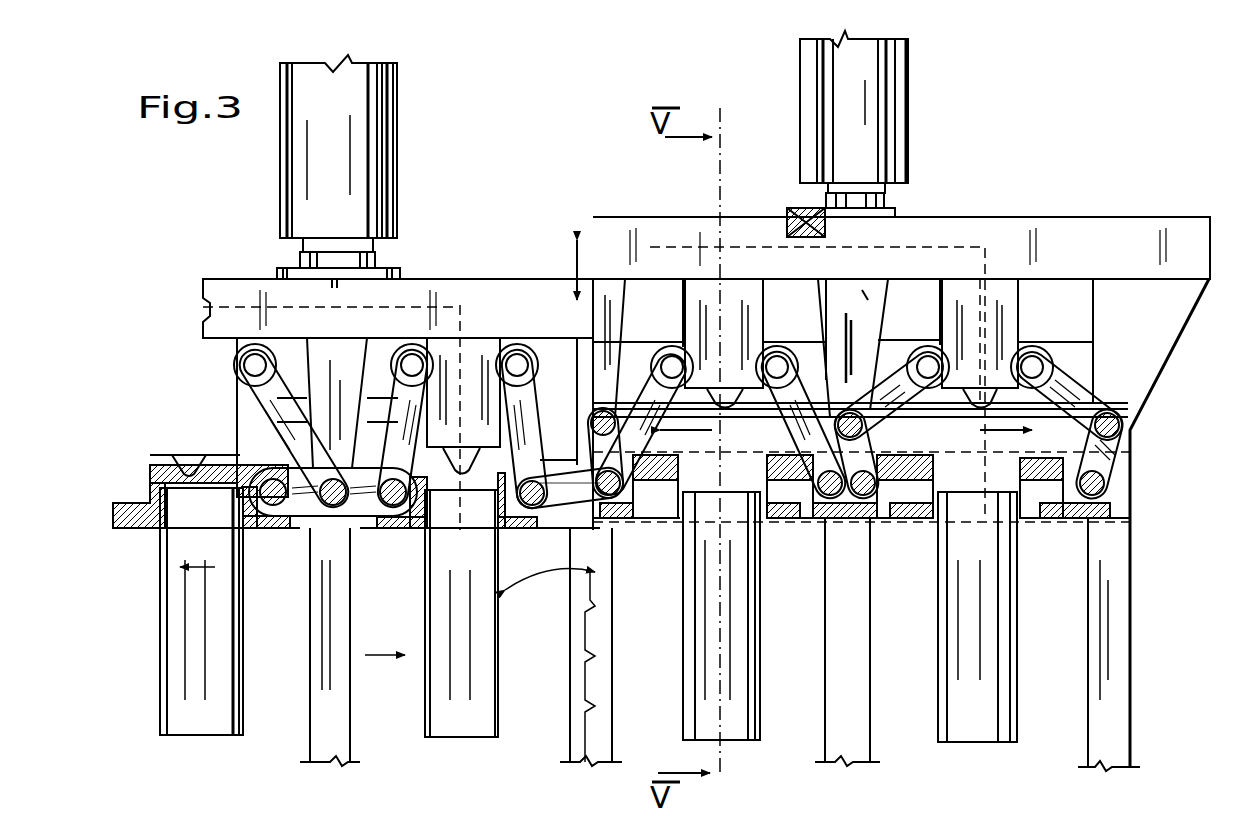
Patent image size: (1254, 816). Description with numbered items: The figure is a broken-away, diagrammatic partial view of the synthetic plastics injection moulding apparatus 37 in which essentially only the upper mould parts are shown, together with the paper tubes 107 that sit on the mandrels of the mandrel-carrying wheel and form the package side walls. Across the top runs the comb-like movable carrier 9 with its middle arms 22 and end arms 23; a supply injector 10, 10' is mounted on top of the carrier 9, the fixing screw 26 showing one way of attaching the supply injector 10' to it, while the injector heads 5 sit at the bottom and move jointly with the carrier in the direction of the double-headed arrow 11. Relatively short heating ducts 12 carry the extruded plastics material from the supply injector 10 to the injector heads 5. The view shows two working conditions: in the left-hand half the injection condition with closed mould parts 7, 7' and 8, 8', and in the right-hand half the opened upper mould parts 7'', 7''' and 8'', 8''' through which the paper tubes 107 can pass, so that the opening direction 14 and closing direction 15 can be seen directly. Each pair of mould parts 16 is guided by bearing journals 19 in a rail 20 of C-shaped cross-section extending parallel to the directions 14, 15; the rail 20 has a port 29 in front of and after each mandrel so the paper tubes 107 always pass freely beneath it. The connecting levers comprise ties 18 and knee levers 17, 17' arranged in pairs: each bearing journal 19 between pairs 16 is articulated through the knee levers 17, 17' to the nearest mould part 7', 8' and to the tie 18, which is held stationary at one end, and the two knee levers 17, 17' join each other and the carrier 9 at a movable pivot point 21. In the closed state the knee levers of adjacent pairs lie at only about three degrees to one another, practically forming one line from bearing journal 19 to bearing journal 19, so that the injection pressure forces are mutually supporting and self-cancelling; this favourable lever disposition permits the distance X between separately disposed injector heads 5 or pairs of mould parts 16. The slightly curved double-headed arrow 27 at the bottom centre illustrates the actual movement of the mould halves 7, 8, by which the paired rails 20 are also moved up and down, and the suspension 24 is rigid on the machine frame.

The injector head 5 is at (723, 388).
The upper mould part 7 is at (130, 541).
The upper mould part 7' is at (360, 646).
The upper mould part 7'' is at (599, 666).
The upper mould part 7''' is at (977, 659).
The upper mould part 8 is at (366, 566).
The upper mould part 8' is at (811, 619).
The upper mould part 8'' is at (850, 630).
The upper mould part 8''' is at (1115, 511).
The movable carrier 9 is at (507, 297).
The supply injector 10 is at (362, 171).
The supply injector 10' is at (885, 113).
The double-headed arrow 11 is at (576, 262).
The heating duct 12 is at (447, 305).
The opening direction 14 is at (682, 293).
The closing direction 15 is at (190, 580).
The pair of mould parts 16 is at (290, 442).
The knee lever 17 is at (624, 608).
The knee lever 17' is at (732, 610).
The tie 18 is at (415, 343).
The bearing journal 19 is at (262, 508).
The rail 20 is at (167, 477).
The movable pivot point 21 is at (330, 518).
The middle arm 22 is at (315, 367).
The end arm 23 is at (1147, 313).
The suspension 24 is at (243, 340).
The fixing screw 26 is at (805, 210).
The double-headed arrow 27 is at (557, 590).
The port 29 is at (735, 470).
The synthetic plastics injection moulding apparatus 37 is at (912, 95).
The paper tube 107 is at (183, 713).
The distance X is at (862, 295).